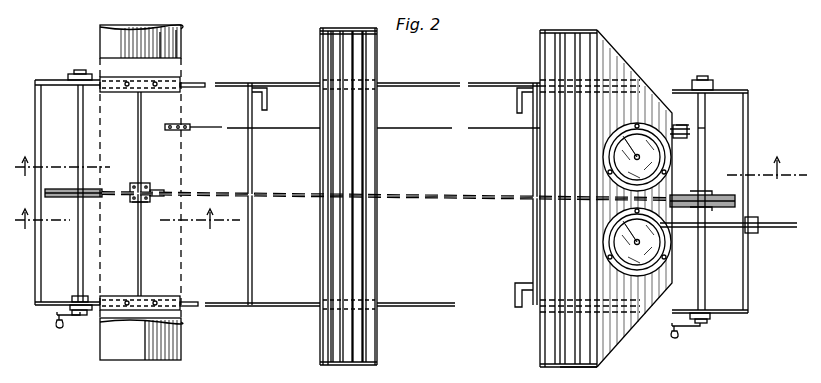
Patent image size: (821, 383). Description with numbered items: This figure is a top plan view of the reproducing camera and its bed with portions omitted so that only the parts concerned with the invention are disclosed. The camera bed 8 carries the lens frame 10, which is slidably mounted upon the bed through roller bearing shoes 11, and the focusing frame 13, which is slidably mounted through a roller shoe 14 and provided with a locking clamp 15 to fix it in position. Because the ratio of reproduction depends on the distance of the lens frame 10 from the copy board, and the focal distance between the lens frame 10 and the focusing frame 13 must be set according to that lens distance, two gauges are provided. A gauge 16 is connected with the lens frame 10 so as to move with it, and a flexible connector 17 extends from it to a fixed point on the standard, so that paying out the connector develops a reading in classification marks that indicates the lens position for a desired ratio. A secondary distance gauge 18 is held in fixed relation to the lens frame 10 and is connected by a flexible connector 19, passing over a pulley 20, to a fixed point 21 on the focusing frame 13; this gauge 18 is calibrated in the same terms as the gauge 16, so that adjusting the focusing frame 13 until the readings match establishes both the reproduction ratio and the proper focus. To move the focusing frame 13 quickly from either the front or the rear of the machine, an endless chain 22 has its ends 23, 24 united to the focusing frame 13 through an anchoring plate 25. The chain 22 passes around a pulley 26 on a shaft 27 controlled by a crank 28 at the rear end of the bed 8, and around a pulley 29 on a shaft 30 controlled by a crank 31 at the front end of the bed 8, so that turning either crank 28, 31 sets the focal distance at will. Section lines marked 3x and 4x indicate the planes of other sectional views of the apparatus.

The camera bed 8 is at (465, 307).
The lens frame 10 is at (578, 364).
The roller bearing shoes 11 is at (621, 80).
The focusing frame 13 is at (168, 106).
The roller shoe 14 is at (166, 78).
The locking clamp 15 is at (142, 258).
The gauge 16 is at (661, 243).
The flexible connector 17 is at (780, 229).
The secondary distance gauge 18 is at (661, 157).
The flexible connector 19 is at (449, 124).
The pulley 20 is at (690, 130).
The fixed point 21 is at (212, 118).
The endless chain 22 is at (291, 200).
The chain end 23 is at (150, 192).
The chain end 24 is at (133, 183).
The anchoring plate 25 is at (138, 203).
The pulley 26 is at (73, 182).
The shaft 27 is at (80, 111).
The crank 28 is at (74, 322).
The pulley 29 is at (720, 193).
The shaft 30 is at (705, 128).
The crank 31 is at (683, 329).
The section line 3 3x is at (410, 175).
The section line 4 4x is at (127, 228).